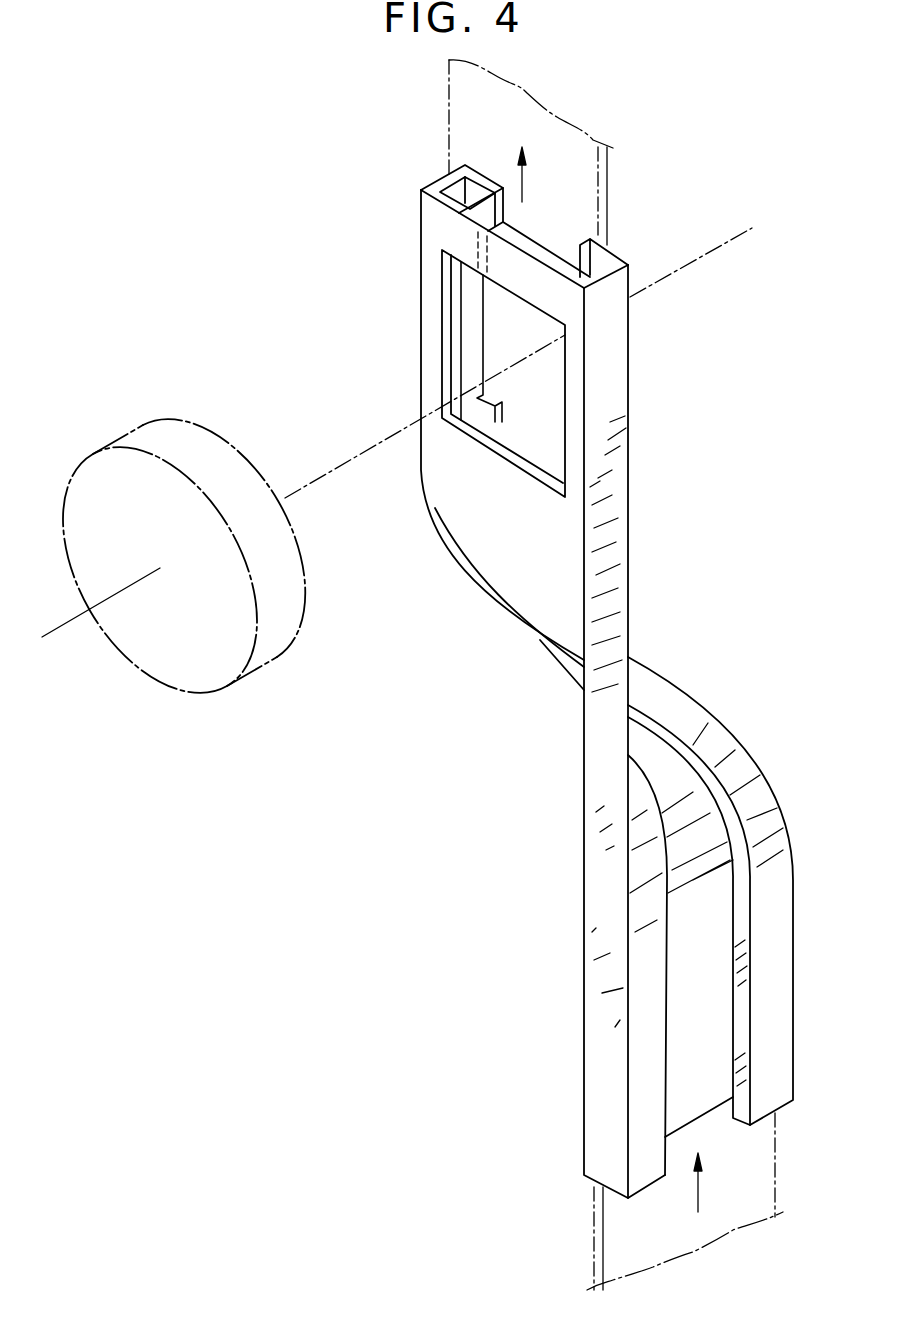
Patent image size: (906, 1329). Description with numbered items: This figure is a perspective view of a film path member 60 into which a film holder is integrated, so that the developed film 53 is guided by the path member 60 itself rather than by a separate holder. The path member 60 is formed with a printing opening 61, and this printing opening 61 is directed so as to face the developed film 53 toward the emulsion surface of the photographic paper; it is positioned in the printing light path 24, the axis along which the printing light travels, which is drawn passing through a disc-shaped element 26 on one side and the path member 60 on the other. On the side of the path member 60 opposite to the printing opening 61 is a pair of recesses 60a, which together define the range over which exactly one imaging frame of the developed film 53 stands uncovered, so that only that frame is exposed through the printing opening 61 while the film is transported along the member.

The printing light path 24 is at (327, 477).
The disc / rotor 26 is at (283, 650).
The developed film 53 is at (594, 1213).
The path member 60 is at (673, 668).
The recess 60a is at (478, 318).
The printing opening 61 is at (567, 402).